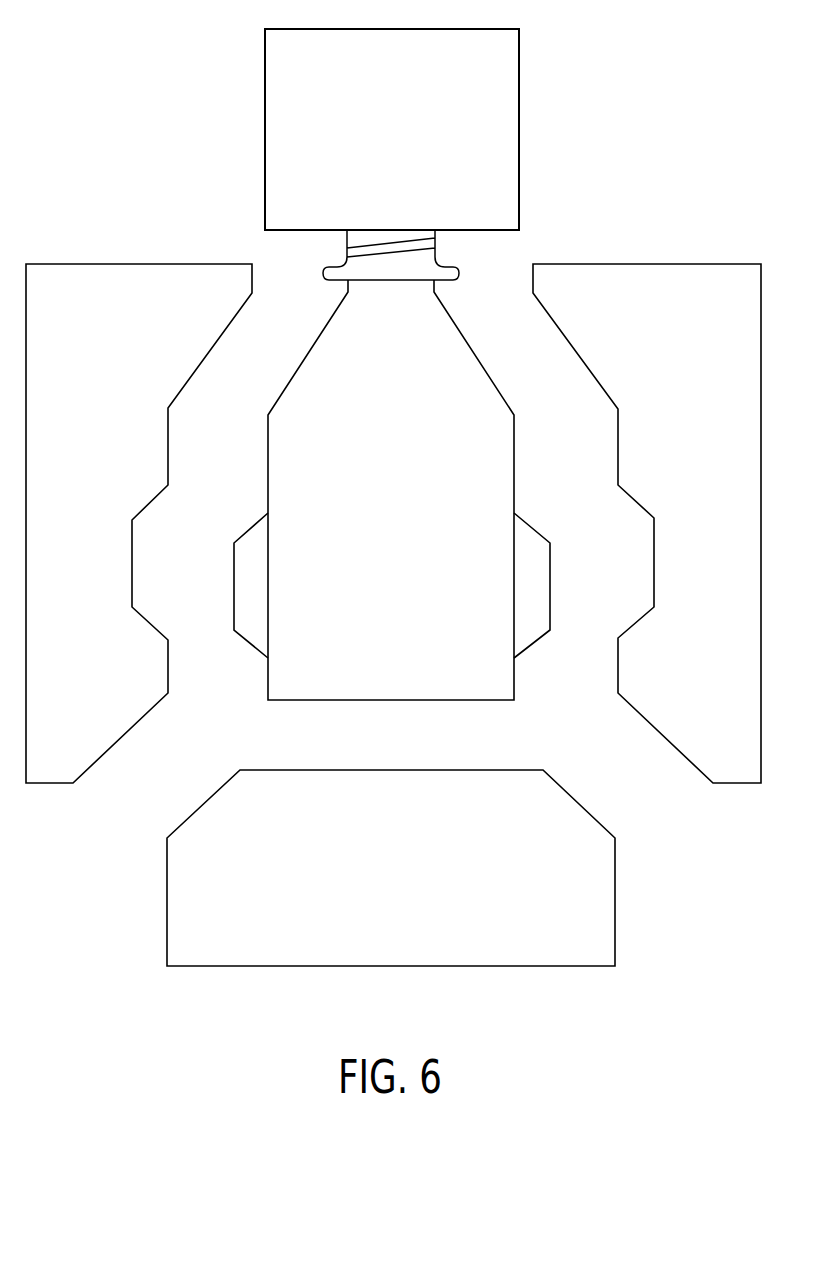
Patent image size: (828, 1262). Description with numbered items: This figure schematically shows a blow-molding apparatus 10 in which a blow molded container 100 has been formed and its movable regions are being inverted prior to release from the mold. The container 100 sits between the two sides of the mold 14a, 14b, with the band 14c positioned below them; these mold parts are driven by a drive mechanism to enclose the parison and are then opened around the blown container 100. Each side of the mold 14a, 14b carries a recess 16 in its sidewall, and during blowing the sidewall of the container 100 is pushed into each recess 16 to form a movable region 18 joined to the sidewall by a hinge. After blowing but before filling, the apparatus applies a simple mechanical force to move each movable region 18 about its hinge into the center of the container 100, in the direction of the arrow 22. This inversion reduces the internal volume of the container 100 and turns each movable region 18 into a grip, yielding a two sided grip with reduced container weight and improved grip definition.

The blow-molding apparatus 10 is at (176, 140).
The mold 14a is at (55, 772).
The mold 14b is at (733, 773).
The band 14c is at (535, 953).
The recess 16 is at (169, 549).
The movable region 18 is at (262, 600).
The arrow 22 is at (486, 586).
The blow molded container 100 is at (407, 512).